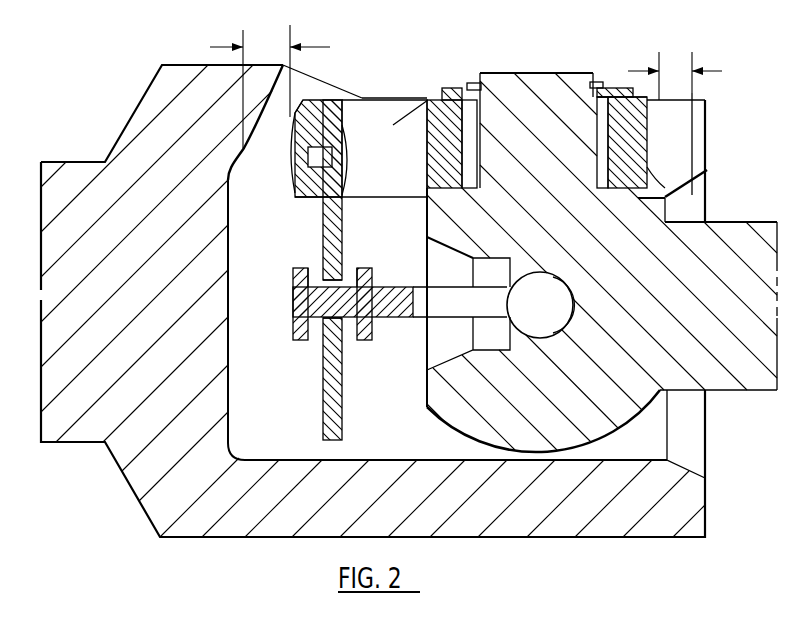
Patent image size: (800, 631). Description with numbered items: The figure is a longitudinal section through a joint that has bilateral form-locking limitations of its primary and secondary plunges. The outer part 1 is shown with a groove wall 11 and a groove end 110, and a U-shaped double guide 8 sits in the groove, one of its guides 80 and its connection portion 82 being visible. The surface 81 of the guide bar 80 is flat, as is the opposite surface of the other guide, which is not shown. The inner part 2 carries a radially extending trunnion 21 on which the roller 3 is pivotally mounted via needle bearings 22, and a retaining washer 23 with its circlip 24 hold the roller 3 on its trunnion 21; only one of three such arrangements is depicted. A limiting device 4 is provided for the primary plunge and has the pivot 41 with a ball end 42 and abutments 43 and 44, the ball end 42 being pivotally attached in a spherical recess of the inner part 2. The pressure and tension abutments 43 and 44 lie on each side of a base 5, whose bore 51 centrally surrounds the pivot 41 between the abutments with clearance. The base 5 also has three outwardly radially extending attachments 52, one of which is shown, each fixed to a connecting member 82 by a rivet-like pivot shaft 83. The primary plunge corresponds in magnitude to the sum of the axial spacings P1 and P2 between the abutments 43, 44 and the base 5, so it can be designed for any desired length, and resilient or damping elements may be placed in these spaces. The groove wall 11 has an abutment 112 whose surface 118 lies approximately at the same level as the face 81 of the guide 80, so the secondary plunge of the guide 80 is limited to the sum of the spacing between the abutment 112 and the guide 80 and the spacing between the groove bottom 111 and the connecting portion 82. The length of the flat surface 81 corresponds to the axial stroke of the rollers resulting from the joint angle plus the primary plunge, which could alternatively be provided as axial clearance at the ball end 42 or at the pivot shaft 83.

The outer part 1 is at (130, 152).
The inner part 2 is at (605, 423).
The roller 3 is at (612, 147).
The limiting device 4 is at (387, 380).
The base 5 is at (323, 222).
The U-shaped double guide 8 is at (419, 100).
The groove wall 11 is at (690, 136).
The trunnion 21 is at (528, 82).
The needle bearings 22 is at (478, 83).
The retaining washer 23 is at (625, 87).
The circlip 24 is at (593, 82).
The pivot 41 is at (412, 318).
The ball end 42 is at (540, 313).
The pressure abutment 43 is at (370, 341).
The tension abutment 44 is at (292, 337).
The bore 51 is at (322, 320).
The attachment 52 is at (313, 98).
The guide 80 is at (402, 100).
The flat surface 81 is at (429, 100).
The connection portion 82 is at (310, 100).
The rivet-like pivot shaft 83 is at (289, 178).
The groove end 110 is at (252, 128).
The groove bottom 111 is at (249, 135).
The abutment 112 is at (693, 153).
The surface 118 is at (700, 170).
The axial spacing P1 is at (348, 273).
The axial spacing P2 is at (315, 278).